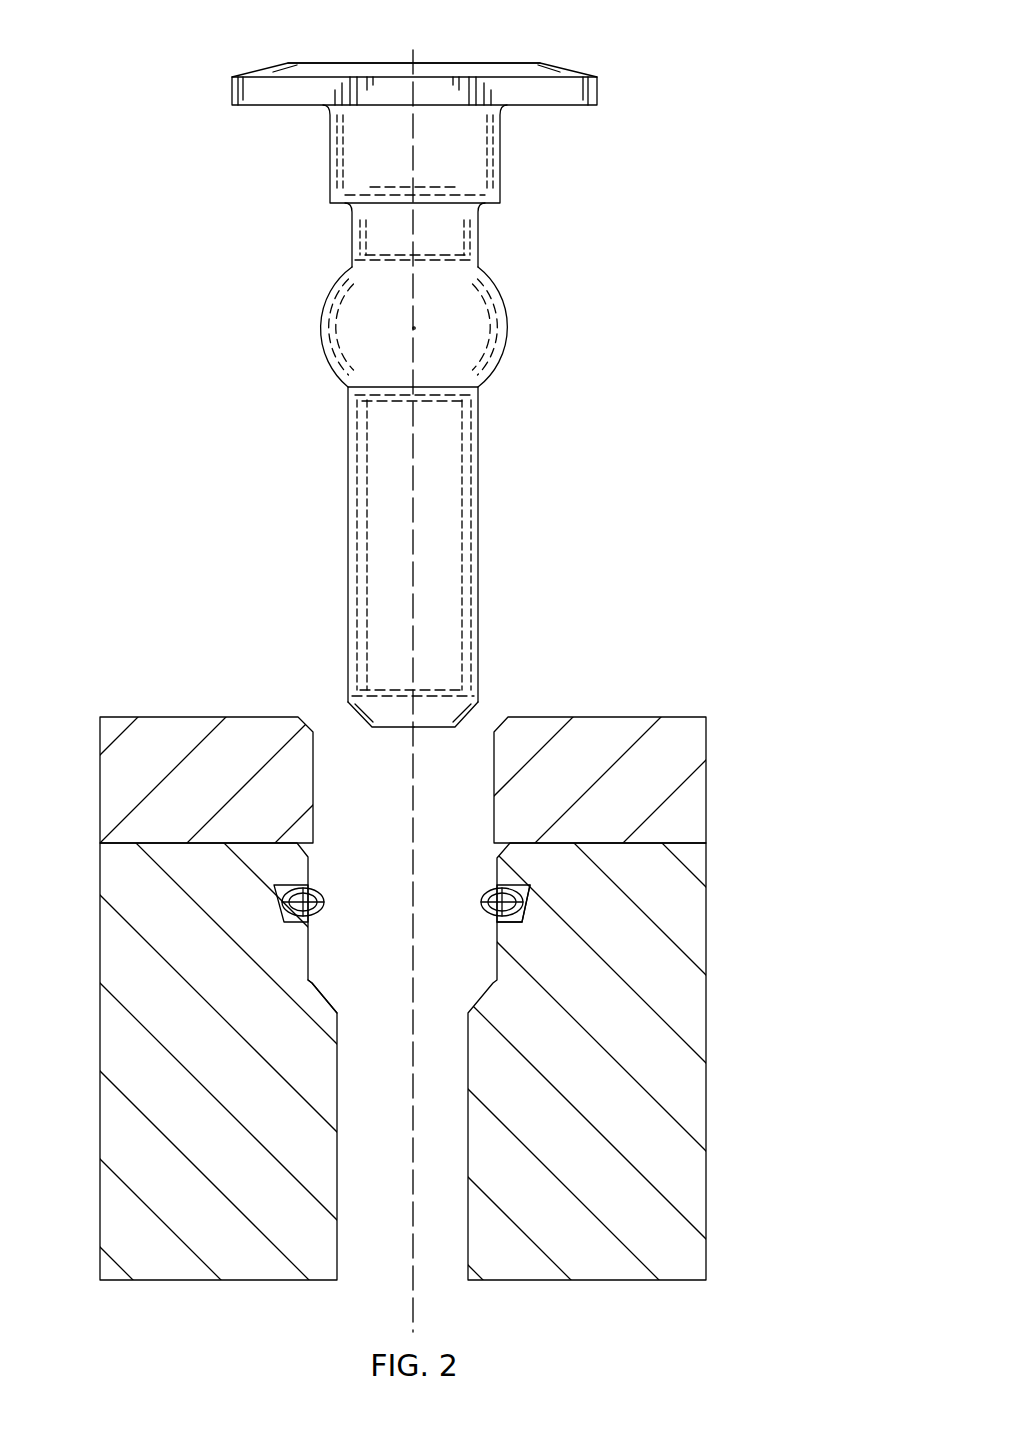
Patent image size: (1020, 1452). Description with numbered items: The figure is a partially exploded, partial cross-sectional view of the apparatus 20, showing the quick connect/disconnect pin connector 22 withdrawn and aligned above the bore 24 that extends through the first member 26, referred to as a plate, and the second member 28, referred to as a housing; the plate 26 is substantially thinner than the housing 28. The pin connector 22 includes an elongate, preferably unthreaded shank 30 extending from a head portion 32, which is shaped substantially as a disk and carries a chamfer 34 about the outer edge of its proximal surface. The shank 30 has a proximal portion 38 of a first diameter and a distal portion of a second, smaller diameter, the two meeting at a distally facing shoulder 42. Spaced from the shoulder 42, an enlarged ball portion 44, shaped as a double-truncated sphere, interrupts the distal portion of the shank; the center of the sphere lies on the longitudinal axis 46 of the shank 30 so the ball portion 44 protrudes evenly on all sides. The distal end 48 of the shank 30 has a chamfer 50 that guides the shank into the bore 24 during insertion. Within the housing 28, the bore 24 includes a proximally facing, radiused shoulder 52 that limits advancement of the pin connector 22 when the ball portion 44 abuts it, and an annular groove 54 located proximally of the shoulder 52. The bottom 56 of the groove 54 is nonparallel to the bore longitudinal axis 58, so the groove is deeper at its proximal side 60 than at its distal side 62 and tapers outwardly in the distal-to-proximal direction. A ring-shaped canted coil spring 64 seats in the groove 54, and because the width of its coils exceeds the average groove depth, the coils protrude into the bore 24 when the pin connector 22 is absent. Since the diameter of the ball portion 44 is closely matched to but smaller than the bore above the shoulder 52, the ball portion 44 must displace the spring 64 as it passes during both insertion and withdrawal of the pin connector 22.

The apparatus 20 is at (184, 598).
The pin connector 22 is at (701, 322).
The bore 24 is at (354, 1113).
The first member 26 is at (697, 783).
The second member 28 is at (624, 1233).
The shank 30 is at (348, 628).
The head portion 32 is at (597, 97).
The chamfer 34 is at (253, 71).
The proximal portion 38 is at (330, 160).
The shoulder 42 is at (490, 206).
The ball portion 44 is at (320, 328).
The longitudinal axis 46 is at (413, 328).
The distal end 48 is at (445, 732).
The chamfer 50 is at (383, 732).
The shoulder 52 is at (327, 1002).
The annular groove 54 is at (295, 885).
The bottom 56 is at (524, 905).
The bore longitudinal axis 58 is at (413, 1307).
The proximal side 60 is at (512, 885).
The distal side 62 is at (512, 923).
The canted coil spring 64 is at (325, 905).